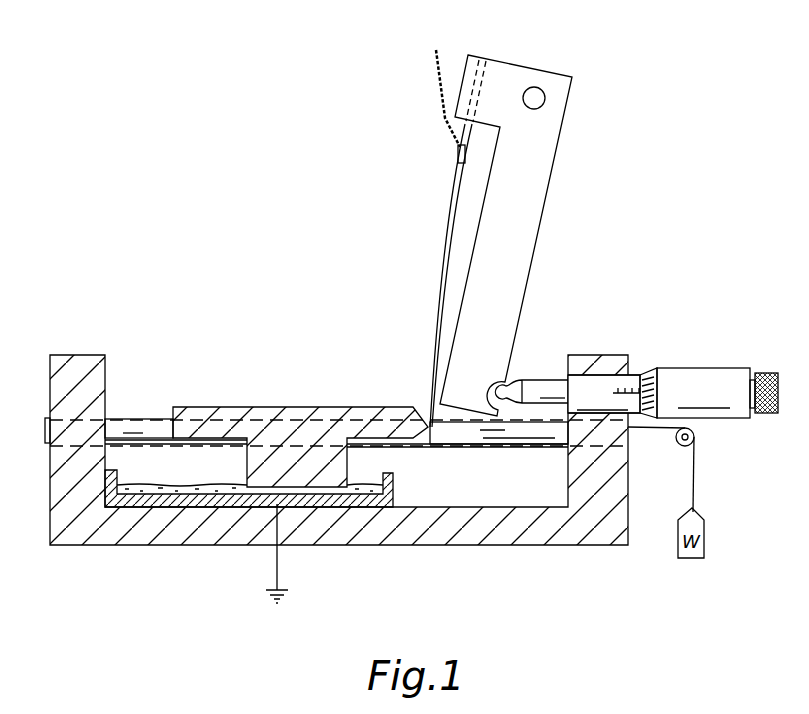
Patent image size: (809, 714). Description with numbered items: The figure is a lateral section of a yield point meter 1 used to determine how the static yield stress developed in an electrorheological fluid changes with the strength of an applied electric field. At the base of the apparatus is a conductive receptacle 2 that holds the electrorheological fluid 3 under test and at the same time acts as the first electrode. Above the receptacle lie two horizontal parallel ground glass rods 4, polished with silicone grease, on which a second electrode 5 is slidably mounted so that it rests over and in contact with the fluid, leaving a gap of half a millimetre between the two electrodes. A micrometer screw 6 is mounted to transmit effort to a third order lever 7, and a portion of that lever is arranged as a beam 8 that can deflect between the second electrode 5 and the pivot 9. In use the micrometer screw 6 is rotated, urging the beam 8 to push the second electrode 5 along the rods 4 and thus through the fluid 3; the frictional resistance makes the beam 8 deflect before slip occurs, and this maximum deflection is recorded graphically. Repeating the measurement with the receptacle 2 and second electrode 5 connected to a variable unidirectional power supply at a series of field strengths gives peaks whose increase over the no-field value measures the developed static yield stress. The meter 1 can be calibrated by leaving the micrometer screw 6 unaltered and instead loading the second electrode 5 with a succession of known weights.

The yield point meter 1 is at (157, 535).
The conductive receptacle 2 is at (396, 487).
The electrorheological fluid 3 is at (185, 485).
The ground glass rods 4 is at (135, 423).
The second electrode 5 is at (268, 412).
The micrometer screw 6 is at (685, 378).
The third order lever 7 is at (547, 160).
The beam 8 is at (446, 290).
The pivot 9 is at (537, 87).